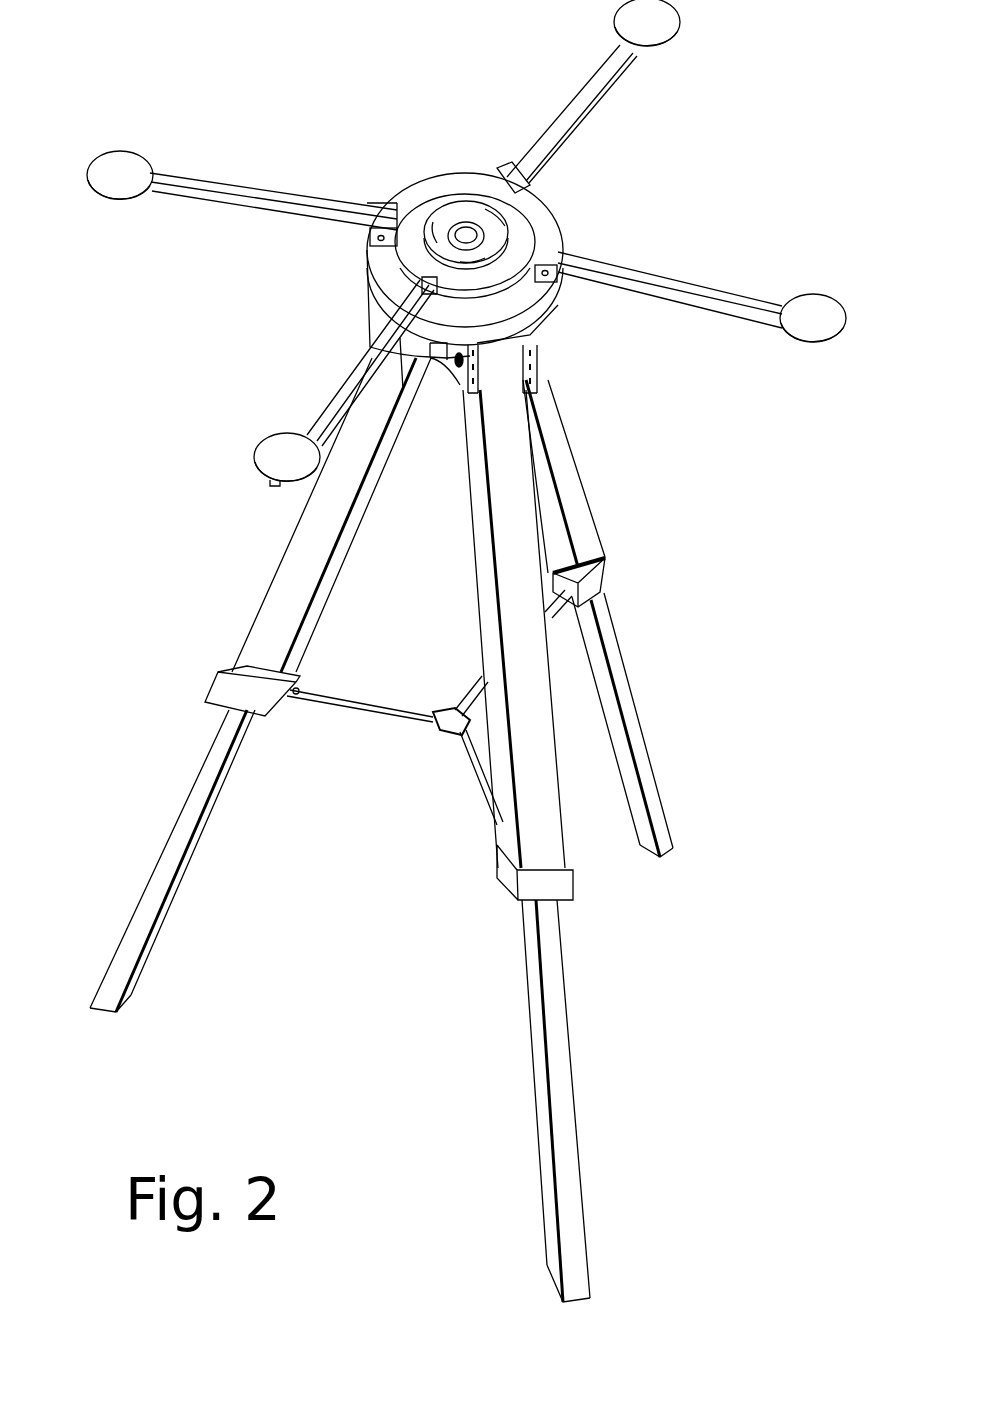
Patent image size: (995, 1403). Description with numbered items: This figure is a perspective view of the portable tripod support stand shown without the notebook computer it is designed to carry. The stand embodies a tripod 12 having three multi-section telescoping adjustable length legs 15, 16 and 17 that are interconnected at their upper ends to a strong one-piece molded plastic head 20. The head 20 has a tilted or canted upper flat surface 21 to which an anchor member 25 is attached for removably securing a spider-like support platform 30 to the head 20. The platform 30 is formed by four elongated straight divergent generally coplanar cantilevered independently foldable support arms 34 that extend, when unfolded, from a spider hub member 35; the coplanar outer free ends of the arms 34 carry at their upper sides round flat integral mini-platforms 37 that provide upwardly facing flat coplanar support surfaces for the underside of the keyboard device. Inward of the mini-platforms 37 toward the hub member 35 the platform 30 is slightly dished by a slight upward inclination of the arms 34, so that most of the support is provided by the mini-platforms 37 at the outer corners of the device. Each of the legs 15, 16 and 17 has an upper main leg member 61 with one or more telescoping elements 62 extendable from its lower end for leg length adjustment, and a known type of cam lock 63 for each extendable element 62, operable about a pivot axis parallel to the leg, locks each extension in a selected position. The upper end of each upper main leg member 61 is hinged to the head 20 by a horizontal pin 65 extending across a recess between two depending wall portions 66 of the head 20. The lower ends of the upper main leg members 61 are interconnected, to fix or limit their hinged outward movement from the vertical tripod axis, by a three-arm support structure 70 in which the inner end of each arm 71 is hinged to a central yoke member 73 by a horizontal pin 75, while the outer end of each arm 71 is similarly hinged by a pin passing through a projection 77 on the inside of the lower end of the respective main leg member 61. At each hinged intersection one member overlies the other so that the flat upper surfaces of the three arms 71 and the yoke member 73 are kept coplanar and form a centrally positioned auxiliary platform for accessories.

The tripod 12 is at (633, 541).
The leg 15 is at (570, 1162).
The leg 16 is at (134, 950).
The leg 17 is at (637, 740).
The head 20 is at (377, 293).
The upper flat surface 21 is at (527, 297).
The anchor member 25 is at (457, 210).
The support platform 30 is at (396, 210).
The support arm 34 is at (650, 262).
The spider hub member 35 is at (470, 195).
The mini-platform 37 is at (655, 28).
The upper main leg member 61 is at (562, 480).
The telescoping element 62 is at (622, 660).
The cam lock 63 is at (603, 578).
The horizontal pin 65 is at (460, 380).
The depending wall portion 66 is at (465, 395).
The three-arm support structure 70 is at (412, 740).
The arm 71 is at (475, 677).
The central yoke member 73 is at (453, 710).
The horizontal pin 75 is at (463, 760).
The projection 77 is at (300, 690).